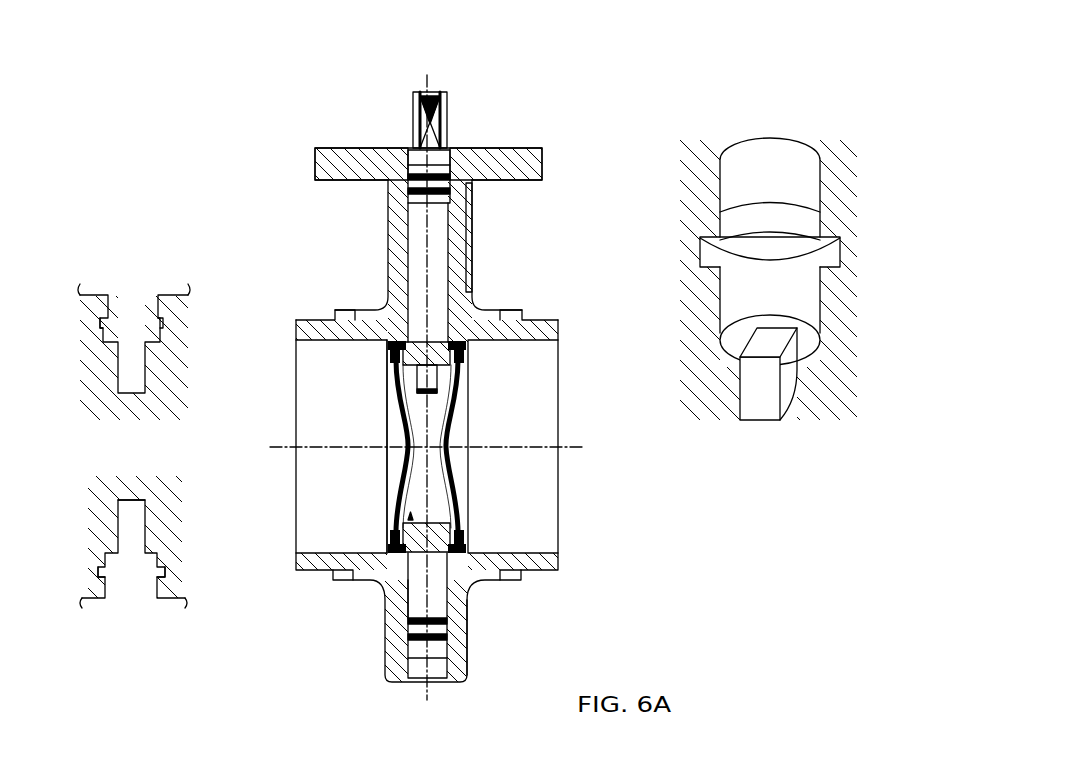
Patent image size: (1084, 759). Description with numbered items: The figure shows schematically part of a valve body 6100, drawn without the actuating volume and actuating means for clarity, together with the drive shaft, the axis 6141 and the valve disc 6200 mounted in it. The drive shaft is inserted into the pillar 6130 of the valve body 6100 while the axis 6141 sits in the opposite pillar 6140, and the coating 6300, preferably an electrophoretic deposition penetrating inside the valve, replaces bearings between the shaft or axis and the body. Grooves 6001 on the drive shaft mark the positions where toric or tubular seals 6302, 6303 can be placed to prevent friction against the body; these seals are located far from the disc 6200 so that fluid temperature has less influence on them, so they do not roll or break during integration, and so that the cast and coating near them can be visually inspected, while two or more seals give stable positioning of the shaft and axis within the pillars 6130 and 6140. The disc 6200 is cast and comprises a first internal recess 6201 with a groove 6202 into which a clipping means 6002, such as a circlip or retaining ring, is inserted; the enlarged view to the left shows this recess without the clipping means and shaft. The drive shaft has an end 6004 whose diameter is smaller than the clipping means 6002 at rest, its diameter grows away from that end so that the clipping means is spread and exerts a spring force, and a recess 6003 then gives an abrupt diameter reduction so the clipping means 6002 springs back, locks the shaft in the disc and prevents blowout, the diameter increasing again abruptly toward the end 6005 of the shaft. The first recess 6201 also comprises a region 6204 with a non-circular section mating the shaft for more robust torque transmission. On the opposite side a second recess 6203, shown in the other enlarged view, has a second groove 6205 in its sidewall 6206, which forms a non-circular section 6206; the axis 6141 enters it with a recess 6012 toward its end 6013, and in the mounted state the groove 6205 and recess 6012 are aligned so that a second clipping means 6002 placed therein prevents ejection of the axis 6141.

The valve body 6100 is at (543, 165).
The end of the shaft 6005 is at (447, 92).
The pillar 6130 is at (388, 232).
The coating 6300 is at (448, 230).
The toric or tubular seal 6302 is at (440, 152).
The toric or tubular seal 6303 is at (457, 188).
The groove 6001 is at (475, 188).
The recess 6003 is at (473, 293).
The clipping means 6002 is at (387, 368).
The pillar 6140 is at (470, 614).
The axis 6141 is at (417, 597).
The valve disc 6200 is at (452, 468).
The end of the drive shaft 6004 is at (470, 416).
The recess 6012 is at (468, 520).
The end of the axis 6013 is at (395, 500).
The first internal recess 6201 is at (765, 148).
The groove 6202 is at (700, 250).
The region with non-circular section 6204 is at (743, 344).
The second recess 6203 is at (130, 583).
The second groove 6205 is at (105, 567).
The sidewall 6206 is at (132, 505).